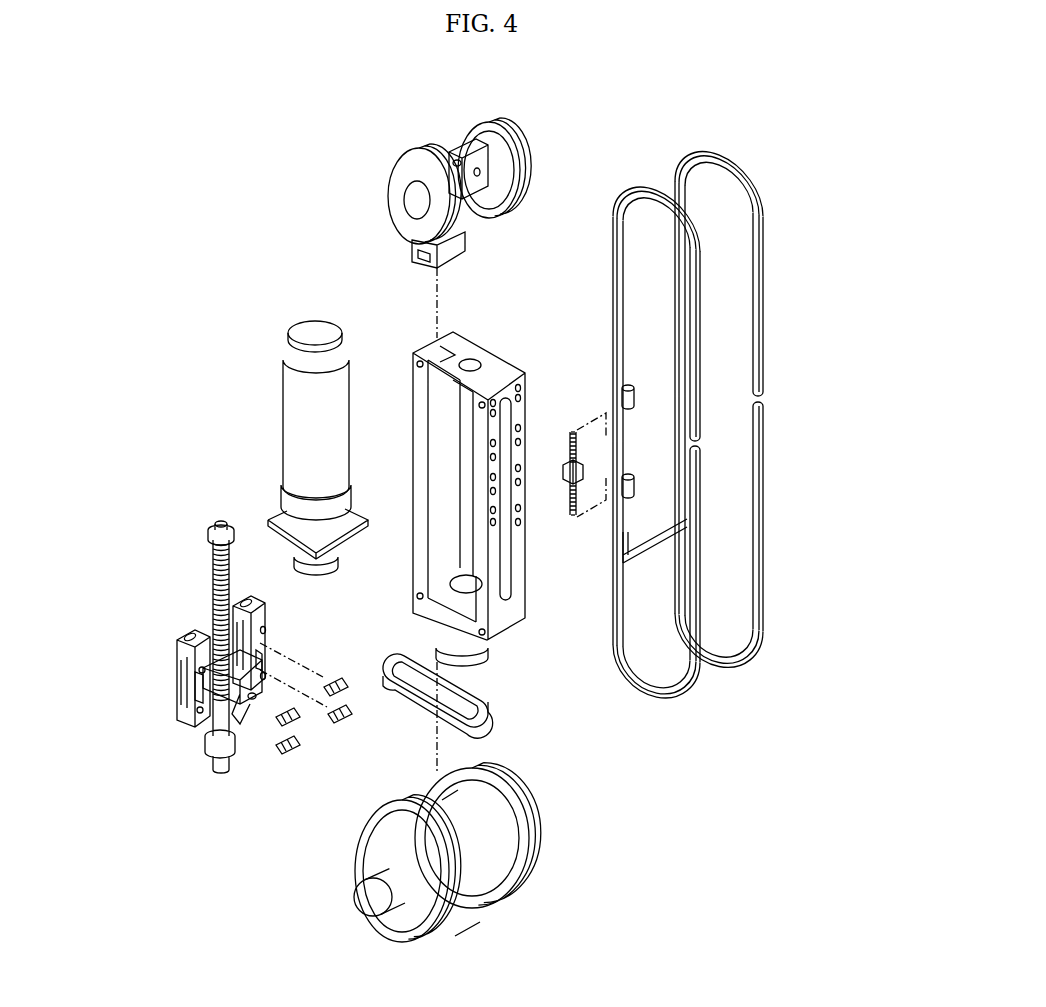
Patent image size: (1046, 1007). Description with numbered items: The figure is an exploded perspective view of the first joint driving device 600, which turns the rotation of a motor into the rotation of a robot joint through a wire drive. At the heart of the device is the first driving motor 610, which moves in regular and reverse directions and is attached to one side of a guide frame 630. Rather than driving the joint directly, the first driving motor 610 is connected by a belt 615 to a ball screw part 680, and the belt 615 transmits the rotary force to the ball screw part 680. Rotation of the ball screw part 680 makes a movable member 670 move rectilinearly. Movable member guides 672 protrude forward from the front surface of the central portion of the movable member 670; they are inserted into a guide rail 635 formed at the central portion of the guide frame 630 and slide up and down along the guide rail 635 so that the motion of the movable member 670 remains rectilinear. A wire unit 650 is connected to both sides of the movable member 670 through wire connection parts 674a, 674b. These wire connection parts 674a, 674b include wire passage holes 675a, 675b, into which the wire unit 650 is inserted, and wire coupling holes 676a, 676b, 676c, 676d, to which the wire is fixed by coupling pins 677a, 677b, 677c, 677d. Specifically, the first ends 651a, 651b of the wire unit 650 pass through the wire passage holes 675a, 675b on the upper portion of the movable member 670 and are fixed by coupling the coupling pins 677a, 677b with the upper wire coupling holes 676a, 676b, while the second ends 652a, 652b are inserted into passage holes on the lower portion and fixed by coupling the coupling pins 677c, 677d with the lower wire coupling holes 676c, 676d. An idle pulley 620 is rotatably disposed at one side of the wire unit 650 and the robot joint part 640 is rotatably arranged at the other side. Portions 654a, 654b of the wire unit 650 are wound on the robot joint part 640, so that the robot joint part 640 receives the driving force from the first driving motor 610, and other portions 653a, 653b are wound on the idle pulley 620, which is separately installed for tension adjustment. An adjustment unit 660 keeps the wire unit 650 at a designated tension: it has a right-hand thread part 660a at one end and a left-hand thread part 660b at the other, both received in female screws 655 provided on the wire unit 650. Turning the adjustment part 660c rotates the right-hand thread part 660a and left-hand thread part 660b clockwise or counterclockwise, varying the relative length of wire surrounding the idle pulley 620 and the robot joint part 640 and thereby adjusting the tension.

The first joint driving device 600 is at (237, 197).
The first driving motor 610 is at (278, 407).
The belt 615 is at (397, 655).
The idle pulley 620 is at (503, 124).
The guide frame 630 is at (495, 502).
The guide rail 635 is at (533, 499).
The robot joint part 640 is at (512, 917).
The wire unit 650 is at (719, 424).
The first end of wire unit 651a is at (694, 432).
The first end of wire unit 651b is at (760, 393).
The second end of wire unit 652a is at (697, 448).
The second end of wire unit 652b is at (763, 405).
The portion of wire unit wound on idle pulley 653a is at (633, 187).
The portion of wire unit wound on idle pulley 653b is at (708, 152).
The portion of wire unit wound on robot joint part 654a is at (660, 700).
The portion of wire unit wound on robot joint part 654b is at (735, 663).
The female screw 655 is at (633, 393).
The adjustment unit 660 is at (569, 458).
The right-hand thread part 660a is at (573, 442).
The left-hand thread part 660b is at (573, 515).
The adjustment part 660c is at (568, 472).
The movable member 670 is at (263, 659).
The movable member guide 672 is at (243, 700).
The wire connection part 674a is at (198, 685).
The wire connection part 674b is at (262, 645).
The wire passage hole 675a is at (190, 638).
The wire passage hole 675b is at (247, 598).
The wire coupling hole 676a is at (199, 670).
The wire coupling hole 676b is at (265, 628).
The wire coupling hole 676c is at (197, 710).
The wire coupling hole 676d is at (265, 675).
The coupling pin 677a is at (300, 728).
The coupling pin 677b is at (350, 692).
The coupling pin 677c is at (295, 760).
The coupling pin 677d is at (350, 725).
The ball screw part 680 is at (202, 557).